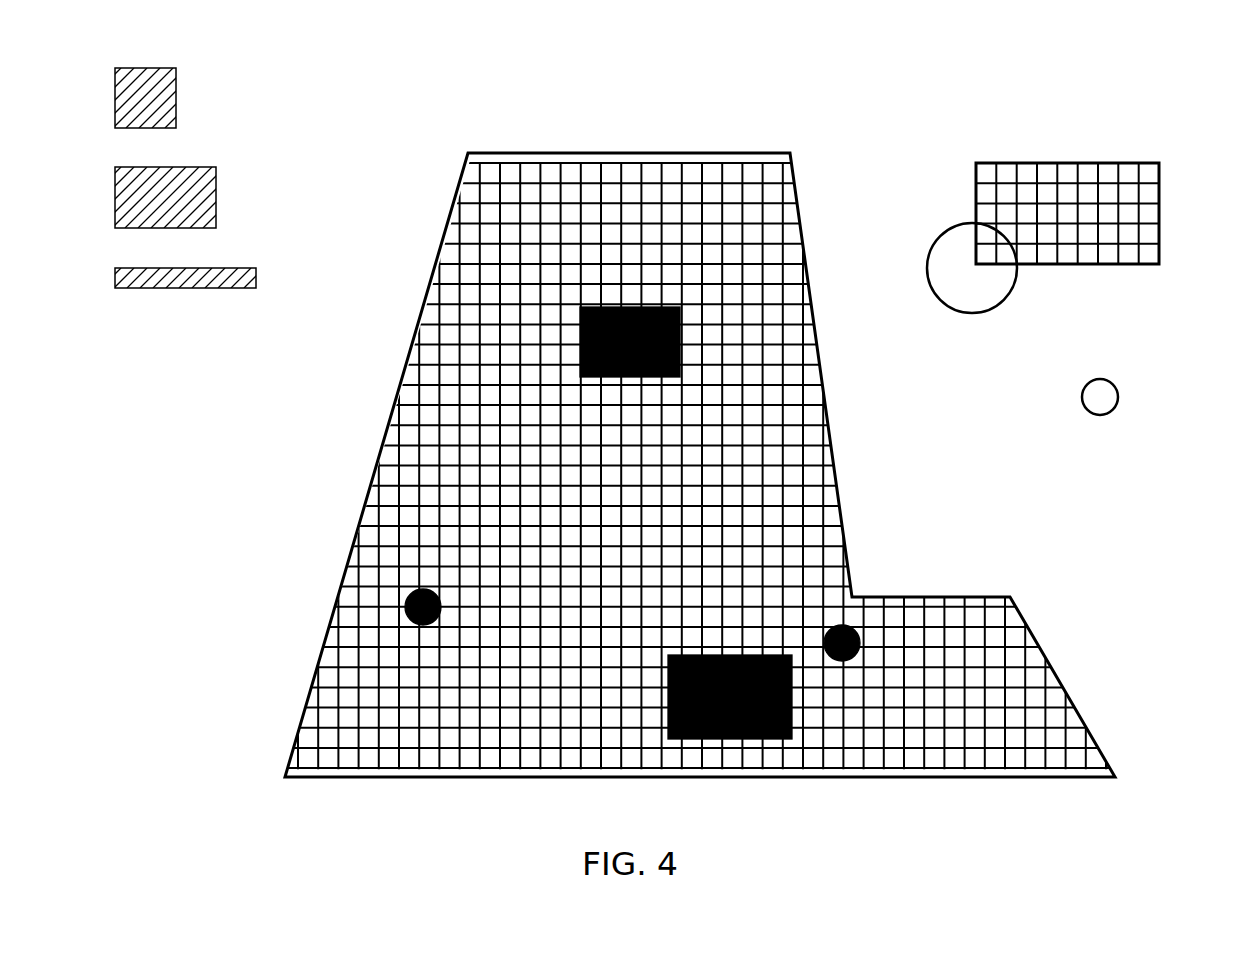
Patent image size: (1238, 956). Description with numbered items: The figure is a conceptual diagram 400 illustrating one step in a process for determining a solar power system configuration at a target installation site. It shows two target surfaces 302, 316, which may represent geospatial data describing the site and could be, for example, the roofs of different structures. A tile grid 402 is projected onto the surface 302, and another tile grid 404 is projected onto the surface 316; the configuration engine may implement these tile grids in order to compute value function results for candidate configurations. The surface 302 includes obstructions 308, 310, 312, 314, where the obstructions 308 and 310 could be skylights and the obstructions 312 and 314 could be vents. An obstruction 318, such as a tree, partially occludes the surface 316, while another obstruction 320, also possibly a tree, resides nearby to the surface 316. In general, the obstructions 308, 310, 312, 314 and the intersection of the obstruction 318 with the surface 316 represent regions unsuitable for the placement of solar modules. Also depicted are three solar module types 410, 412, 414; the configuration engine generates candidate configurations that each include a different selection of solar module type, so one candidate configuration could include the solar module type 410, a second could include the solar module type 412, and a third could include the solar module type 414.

The conceptual diagram 400 is at (1100, 86).
The surface 302 is at (450, 213).
The tile grid 402 is at (428, 333).
The obstruction 308 is at (680, 345).
The obstruction 310 is at (742, 739).
The obstruction 312 is at (410, 620).
The obstruction 314 is at (856, 628).
The surface 316 is at (976, 183).
The tile grid 404 is at (1147, 215).
The obstruction 318 is at (1015, 290).
The obstruction 320 is at (1118, 390).
The solar module type 410 is at (176, 88).
The solar module type 412 is at (216, 187).
The solar module type 414 is at (256, 277).